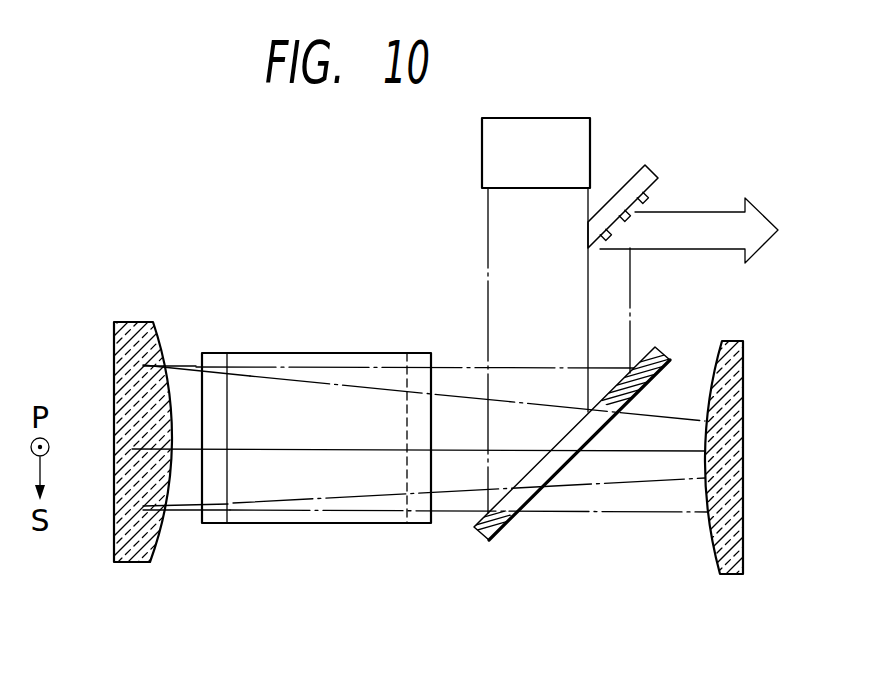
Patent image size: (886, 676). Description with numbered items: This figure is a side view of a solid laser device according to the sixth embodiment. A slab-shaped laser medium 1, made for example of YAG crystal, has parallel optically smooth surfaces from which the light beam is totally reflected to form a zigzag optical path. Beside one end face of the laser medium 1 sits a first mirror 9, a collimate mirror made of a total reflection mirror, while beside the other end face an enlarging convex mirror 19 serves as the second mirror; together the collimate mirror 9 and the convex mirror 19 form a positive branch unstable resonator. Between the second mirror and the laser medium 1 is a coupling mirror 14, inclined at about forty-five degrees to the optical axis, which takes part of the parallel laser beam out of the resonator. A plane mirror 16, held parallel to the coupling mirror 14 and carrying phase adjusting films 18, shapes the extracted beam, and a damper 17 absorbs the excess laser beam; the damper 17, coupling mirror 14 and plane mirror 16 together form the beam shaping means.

The laser medium 1 is at (334, 353).
The first mirror 9 is at (139, 321).
The coupling mirror 14 is at (494, 538).
The plane mirror 16 is at (644, 178).
The damper 17 is at (571, 127).
The phase adjusting films 18 is at (648, 201).
The enlarging convex mirror 19 is at (728, 578).